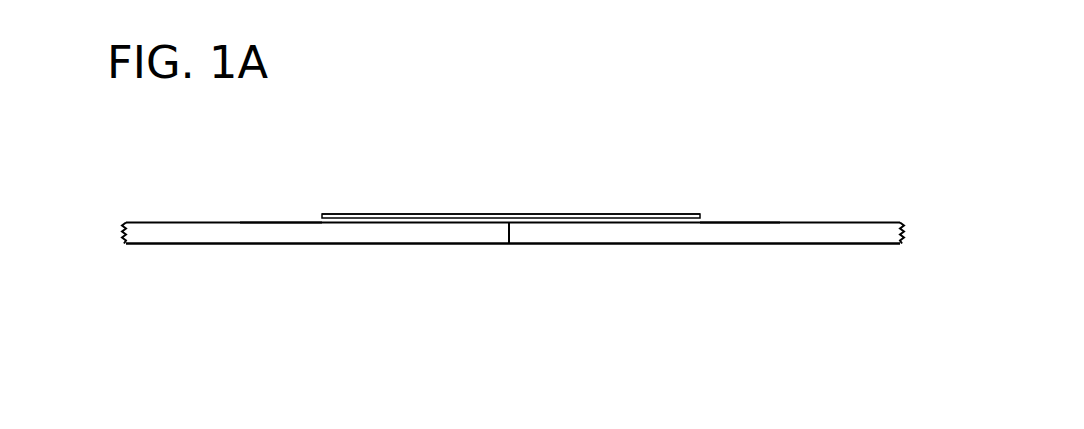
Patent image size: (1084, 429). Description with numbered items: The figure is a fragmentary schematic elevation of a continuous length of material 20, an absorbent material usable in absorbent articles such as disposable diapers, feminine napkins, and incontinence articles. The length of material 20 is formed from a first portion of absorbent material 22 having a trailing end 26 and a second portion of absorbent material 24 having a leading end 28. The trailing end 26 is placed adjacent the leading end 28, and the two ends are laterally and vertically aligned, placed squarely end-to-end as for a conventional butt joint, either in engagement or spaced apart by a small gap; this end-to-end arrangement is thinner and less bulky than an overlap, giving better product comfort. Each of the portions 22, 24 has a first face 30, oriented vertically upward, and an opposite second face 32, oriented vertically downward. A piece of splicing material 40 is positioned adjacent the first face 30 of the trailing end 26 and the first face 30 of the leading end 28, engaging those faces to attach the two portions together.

The length of material 20 is at (542, 185).
The first portion of absorbent material 22 is at (197, 212).
The second portion of absorbent material 24 is at (829, 206).
The trailing end 26 is at (428, 243).
The leading end 28 is at (585, 243).
The first face 30 is at (280, 222).
The second face 32 is at (273, 243).
The piece of splicing material 40 is at (437, 214).